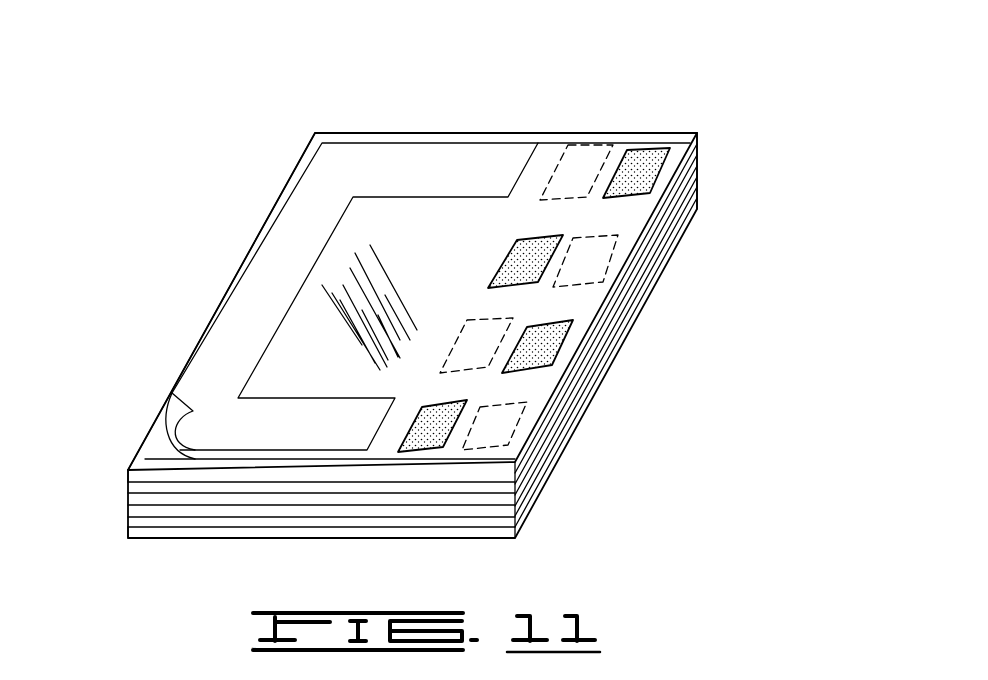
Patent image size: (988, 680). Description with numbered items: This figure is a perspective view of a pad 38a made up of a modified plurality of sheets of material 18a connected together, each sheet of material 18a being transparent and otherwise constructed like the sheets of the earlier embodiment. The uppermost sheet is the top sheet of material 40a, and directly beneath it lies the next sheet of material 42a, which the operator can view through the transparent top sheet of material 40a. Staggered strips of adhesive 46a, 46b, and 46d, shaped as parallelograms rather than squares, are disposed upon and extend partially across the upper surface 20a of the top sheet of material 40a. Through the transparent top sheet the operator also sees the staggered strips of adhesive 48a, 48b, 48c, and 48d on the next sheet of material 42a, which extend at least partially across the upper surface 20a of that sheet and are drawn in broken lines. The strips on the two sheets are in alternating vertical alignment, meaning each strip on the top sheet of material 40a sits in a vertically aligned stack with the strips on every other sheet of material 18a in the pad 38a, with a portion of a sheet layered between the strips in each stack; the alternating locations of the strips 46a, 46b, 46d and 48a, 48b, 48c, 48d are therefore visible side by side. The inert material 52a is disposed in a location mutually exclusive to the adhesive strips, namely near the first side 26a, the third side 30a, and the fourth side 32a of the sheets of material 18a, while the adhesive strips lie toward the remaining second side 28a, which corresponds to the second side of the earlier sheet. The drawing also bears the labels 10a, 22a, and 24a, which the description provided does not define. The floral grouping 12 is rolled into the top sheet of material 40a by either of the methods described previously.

The circuit board assembly 10a is at (475, 116).
The floral grouping 12 is at (417, 342).
The sheet of material 18a is at (331, 131).
The upper surface 20a is at (467, 140).
The folded trace end 22a is at (170, 402).
The laminated layers 24a is at (517, 535).
The first side 26a is at (210, 317).
The corner 28a is at (700, 147).
The third side 30a is at (415, 131).
The fourth side 32a is at (487, 466).
The pad 38a is at (150, 518).
The top sheet of material 40a is at (557, 143).
The next sheet of material 42a is at (143, 475).
The staggered strip of adhesive 46a is at (645, 170).
The staggered strip of adhesive 46b is at (538, 258).
The staggered strip of adhesive 46d is at (440, 423).
The staggered strip of adhesive 48a is at (587, 167).
The staggered strip of adhesive 48b is at (590, 267).
The staggered strip of adhesive 48c is at (488, 345).
The staggered strip of adhesive 48d is at (480, 432).
The inert material 52a is at (265, 283).